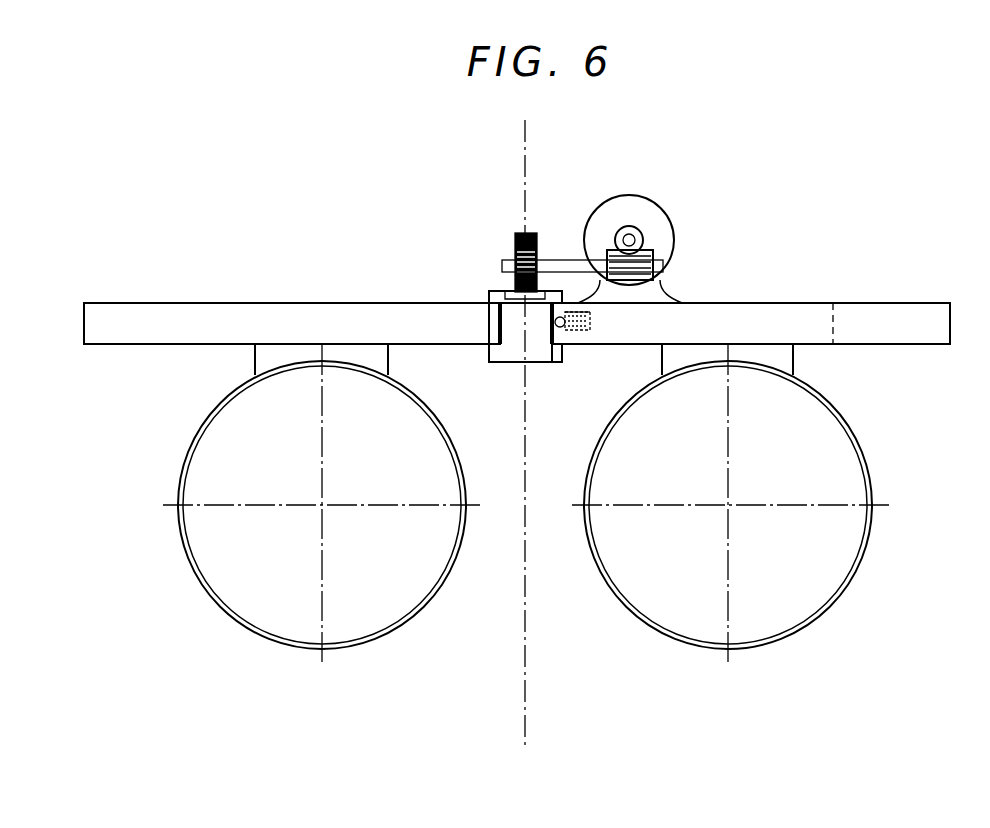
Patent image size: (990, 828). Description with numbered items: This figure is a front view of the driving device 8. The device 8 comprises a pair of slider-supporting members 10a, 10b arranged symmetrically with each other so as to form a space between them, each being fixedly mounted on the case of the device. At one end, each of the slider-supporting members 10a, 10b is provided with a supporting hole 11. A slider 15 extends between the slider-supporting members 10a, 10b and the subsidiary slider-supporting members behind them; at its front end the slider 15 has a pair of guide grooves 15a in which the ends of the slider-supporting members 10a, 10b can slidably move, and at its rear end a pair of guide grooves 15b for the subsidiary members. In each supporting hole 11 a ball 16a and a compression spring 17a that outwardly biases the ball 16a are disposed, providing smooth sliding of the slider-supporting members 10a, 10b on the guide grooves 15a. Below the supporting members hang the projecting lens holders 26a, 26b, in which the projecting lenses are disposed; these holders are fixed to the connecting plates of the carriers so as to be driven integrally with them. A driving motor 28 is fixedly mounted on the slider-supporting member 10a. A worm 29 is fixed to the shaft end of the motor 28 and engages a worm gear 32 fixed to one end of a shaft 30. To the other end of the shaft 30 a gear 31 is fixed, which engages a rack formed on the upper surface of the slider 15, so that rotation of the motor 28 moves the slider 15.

The driving device 8 is at (785, 268).
The slider-supporting member 10a is at (905, 300).
The slider-supporting member 10b is at (127, 315).
The supporting hole 11 is at (583, 330).
The slider 15 is at (497, 361).
The guide groove 15a is at (550, 337).
The guide groove 15b is at (497, 328).
The ball 16a is at (556, 328).
The compression spring 17a is at (574, 332).
The projecting lens holder 26a is at (680, 642).
The projecting lens holder 26b is at (283, 643).
The driving motor 28 is at (657, 212).
The worm 29 is at (643, 238).
The shaft 30 is at (555, 260).
The gear 31 is at (515, 232).
The worm gear 32 is at (650, 251).